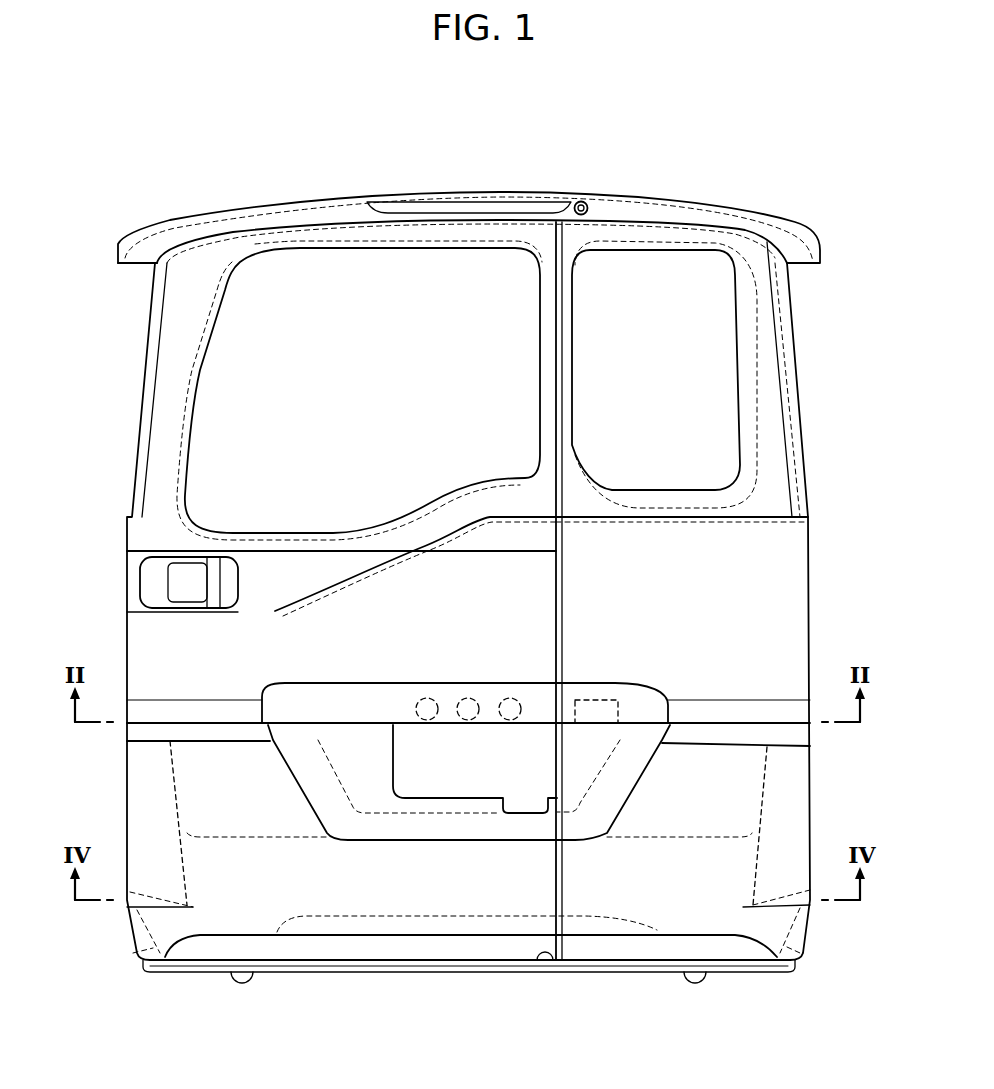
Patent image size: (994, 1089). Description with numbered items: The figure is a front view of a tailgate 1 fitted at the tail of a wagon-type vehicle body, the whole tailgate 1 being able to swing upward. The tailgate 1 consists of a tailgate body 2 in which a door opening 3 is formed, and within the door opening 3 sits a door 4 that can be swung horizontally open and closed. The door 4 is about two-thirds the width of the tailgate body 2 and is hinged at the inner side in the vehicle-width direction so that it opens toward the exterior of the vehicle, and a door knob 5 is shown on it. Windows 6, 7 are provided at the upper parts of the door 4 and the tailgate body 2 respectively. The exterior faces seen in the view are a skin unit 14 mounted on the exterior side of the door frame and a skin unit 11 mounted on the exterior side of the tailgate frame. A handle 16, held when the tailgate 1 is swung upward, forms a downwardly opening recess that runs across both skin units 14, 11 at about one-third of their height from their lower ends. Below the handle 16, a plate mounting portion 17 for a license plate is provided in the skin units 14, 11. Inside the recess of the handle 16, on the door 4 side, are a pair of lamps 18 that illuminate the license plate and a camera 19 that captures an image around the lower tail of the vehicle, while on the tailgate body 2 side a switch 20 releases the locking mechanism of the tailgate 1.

The tailgate 1 is at (702, 194).
The tailgate body 2 is at (777, 537).
The door opening 3 is at (550, 958).
The door 4 is at (353, 893).
The door knob 5 is at (178, 582).
The window 6 is at (275, 252).
The window 7 is at (612, 240).
The skin unit 11 is at (795, 633).
The skin unit 14 is at (150, 660).
The handle 16 is at (127, 768).
The plate mounting portion 17 is at (458, 773).
The lamps 18 is at (421, 697).
The camera 19 is at (461, 698).
The switch 20 is at (598, 700).